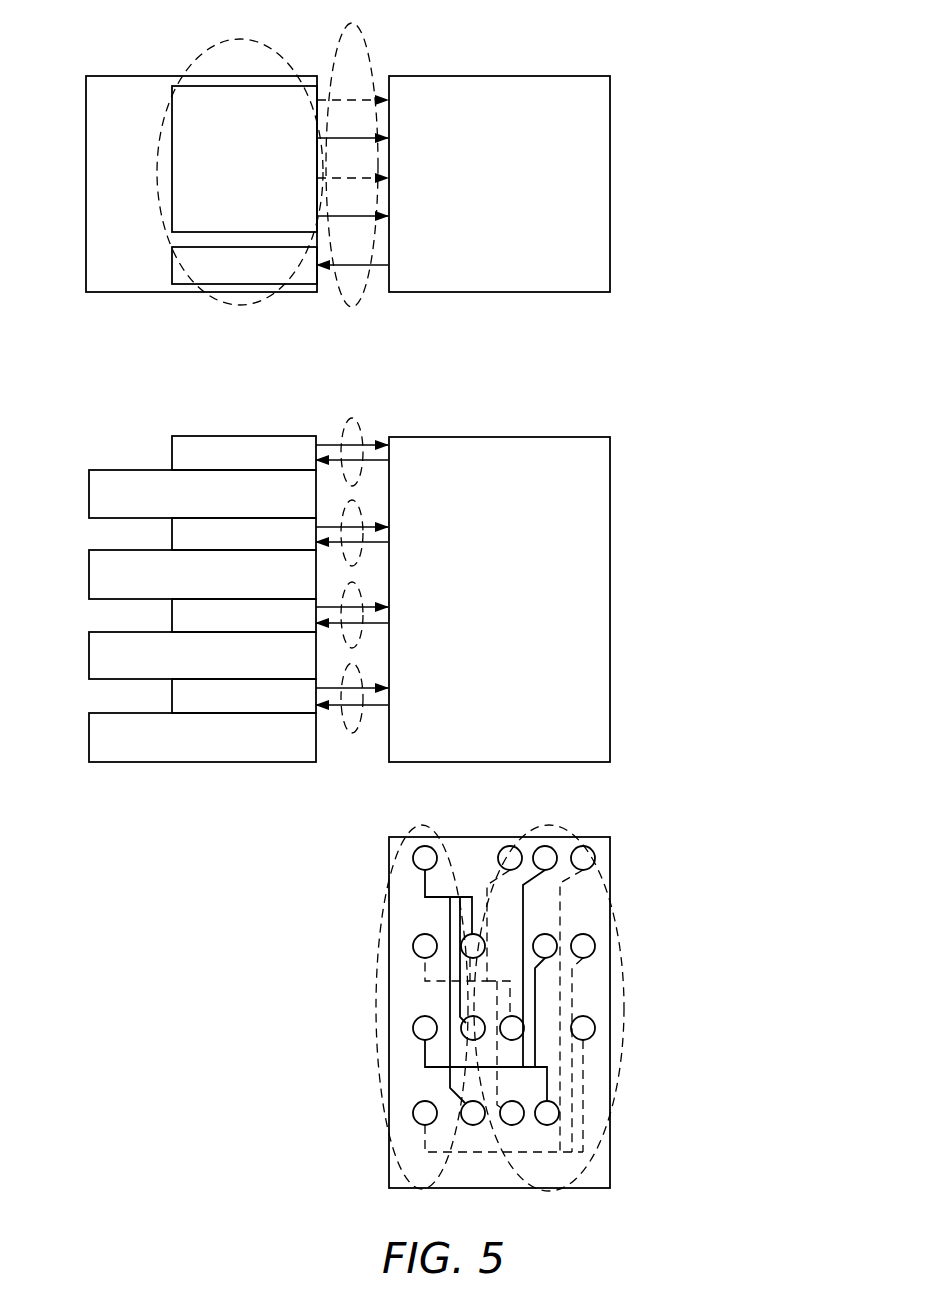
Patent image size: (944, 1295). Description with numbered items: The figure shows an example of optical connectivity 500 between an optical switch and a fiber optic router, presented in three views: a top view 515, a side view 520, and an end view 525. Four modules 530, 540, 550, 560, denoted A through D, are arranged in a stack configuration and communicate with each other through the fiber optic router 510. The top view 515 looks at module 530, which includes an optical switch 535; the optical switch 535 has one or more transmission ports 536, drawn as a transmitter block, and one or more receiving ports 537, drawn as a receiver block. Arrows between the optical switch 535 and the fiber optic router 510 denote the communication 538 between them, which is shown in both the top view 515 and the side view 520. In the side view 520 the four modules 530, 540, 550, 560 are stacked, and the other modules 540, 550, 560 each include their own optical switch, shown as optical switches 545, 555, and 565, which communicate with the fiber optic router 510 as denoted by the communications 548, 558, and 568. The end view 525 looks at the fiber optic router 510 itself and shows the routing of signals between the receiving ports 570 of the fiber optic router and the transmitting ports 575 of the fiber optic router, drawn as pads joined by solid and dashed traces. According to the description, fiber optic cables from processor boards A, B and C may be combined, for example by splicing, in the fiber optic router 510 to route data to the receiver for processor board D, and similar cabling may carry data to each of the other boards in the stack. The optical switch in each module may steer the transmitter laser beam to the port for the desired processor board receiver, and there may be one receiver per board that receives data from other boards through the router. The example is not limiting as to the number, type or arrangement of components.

The connectivity 500 is at (797, 27).
The fiber optic router 510 is at (500, 76).
The top view 515 is at (807, 186).
The side view 520 is at (808, 589).
The end view 525 is at (808, 1013).
The module 530 is at (131, 76).
The optical switch 535 is at (256, 41).
The transmission ports 536 is at (206, 86).
The receiving ports 537 is at (172, 264).
The communication 538 is at (352, 37).
The module 540 is at (89, 576).
The optical switch 545 is at (172, 534).
The communication 548 is at (360, 516).
The module 550 is at (89, 656).
The optical switch 555 is at (172, 615).
The communication 558 is at (358, 645).
The module 560 is at (89, 738).
The optical switch 565 is at (172, 694).
The communication 568 is at (352, 733).
The receiving ports 570 is at (624, 946).
The transmitting ports 575 is at (375, 1005).